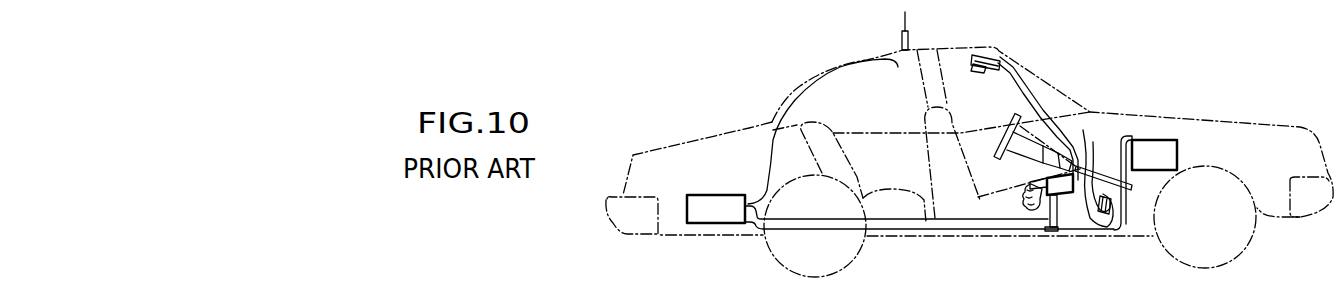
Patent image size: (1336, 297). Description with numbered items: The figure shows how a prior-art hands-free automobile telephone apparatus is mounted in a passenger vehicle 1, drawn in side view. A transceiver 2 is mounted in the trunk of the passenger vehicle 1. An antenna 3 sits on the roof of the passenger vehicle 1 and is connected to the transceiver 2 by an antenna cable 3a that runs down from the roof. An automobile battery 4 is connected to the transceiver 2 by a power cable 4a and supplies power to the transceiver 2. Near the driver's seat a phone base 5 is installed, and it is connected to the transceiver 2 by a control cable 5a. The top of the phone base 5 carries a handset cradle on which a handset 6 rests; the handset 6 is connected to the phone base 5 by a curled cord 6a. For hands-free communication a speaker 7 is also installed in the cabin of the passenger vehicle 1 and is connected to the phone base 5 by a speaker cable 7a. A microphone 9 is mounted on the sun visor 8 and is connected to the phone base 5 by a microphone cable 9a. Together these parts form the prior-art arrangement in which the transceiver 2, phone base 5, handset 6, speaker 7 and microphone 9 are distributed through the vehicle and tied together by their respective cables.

The passenger vehicle 1 is at (1250, 120).
The transceiver 2 is at (718, 203).
The antenna 3 is at (905, 21).
The antenna cable 3a is at (771, 138).
The automobile battery 4 is at (1168, 160).
The power cable 4a is at (840, 230).
The phone base 5 is at (1066, 196).
The control cable 5a is at (930, 207).
The handset 6 is at (1037, 182).
The curled cord 6a is at (1023, 202).
The speaker 7 is at (1107, 187).
The speaker cable 7a is at (1107, 232).
The sun visor 8 is at (982, 54).
The microphone 9 is at (978, 73).
The microphone cable 9a is at (1020, 88).